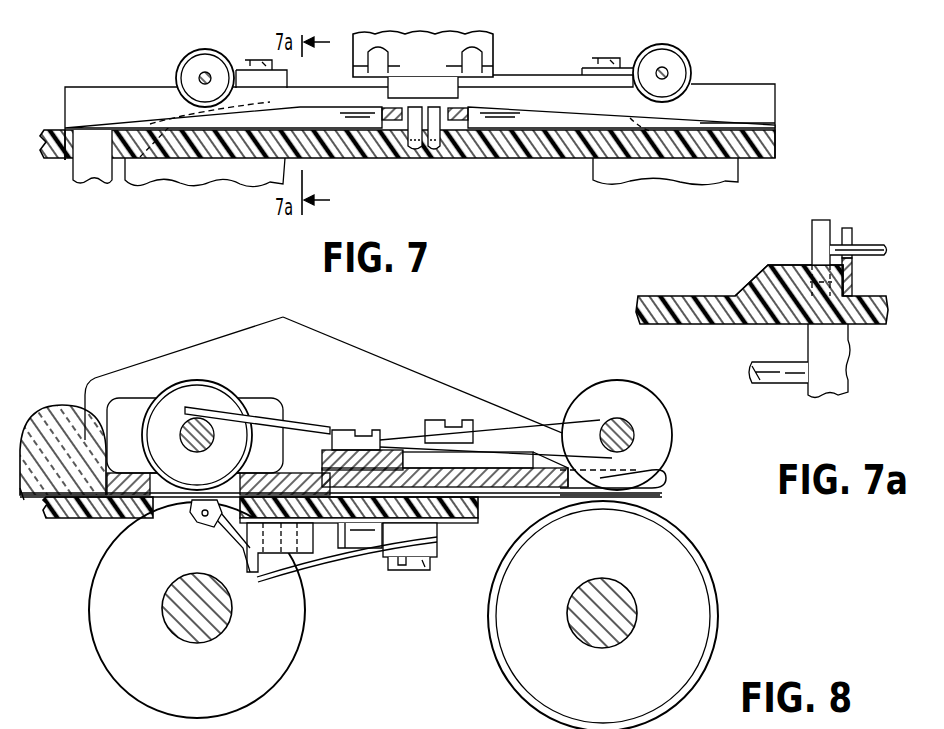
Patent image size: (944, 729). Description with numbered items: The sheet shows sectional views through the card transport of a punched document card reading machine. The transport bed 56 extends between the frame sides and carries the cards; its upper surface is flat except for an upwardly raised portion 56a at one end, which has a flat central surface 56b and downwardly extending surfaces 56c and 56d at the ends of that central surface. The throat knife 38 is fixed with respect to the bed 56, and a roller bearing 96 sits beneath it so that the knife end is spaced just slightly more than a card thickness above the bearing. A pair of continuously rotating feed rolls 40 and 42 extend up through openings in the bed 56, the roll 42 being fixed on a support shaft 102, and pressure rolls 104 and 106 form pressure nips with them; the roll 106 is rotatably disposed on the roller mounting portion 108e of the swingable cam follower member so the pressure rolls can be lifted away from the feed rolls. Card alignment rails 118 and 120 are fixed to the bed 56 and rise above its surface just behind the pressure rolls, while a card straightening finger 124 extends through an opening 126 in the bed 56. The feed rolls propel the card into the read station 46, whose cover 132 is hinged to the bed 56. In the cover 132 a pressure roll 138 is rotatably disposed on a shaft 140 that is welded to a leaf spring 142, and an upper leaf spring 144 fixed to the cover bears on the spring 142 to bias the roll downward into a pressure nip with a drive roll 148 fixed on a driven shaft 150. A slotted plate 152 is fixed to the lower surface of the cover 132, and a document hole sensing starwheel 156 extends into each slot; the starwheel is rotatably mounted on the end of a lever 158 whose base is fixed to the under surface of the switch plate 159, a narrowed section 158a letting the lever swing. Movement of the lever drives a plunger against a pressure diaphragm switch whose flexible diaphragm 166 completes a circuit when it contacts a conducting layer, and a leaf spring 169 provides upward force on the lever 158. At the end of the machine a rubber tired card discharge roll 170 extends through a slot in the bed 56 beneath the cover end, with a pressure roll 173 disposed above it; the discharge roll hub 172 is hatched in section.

In FIG. 7, the throat knife 38 is at (497, 43).
In FIG. 7, the feed roll 40 is at (622, 183).
In FIG. 7, the feed roll 42 is at (163, 190).
In FIG. 7a, the feed roll 42 is at (822, 398).
In FIG. 8, the read station 46 is at (379, 352).
In FIG. 7, the transport bed 56 is at (503, 153).
In FIG. 7a, the transport bed 56 is at (708, 297).
In FIG. 8, the transport bed 56 is at (60, 519).
In FIG. 7, the raised portion 56a is at (360, 120).
In FIG. 7a, the raised portion 56a is at (783, 270).
In FIG. 7, the flat central surface 56b is at (510, 100).
In FIG. 7, the downwardly extending surface 56c is at (268, 102).
In FIG. 7, the downwardly extending surface 56d is at (740, 123).
In FIG. 7, the roller bearing 96 is at (418, 150).
In FIG. 7a, the support shaft 102 is at (750, 364).
In FIG. 7, the pressure roll 104 is at (690, 58).
In FIG. 7, the pressure roll 106 is at (177, 72).
In FIG. 7a, the pressure roll 106 is at (820, 220).
In FIG. 7a, the roller mounting portion 108e is at (887, 243).
In FIG. 7, the card alignment rail 118 is at (767, 100).
In FIG. 7, the card alignment rail 120 is at (88, 92).
In FIG. 7a, the card alignment rail 120 is at (848, 228).
In FIG. 7, the card straightening finger 124 is at (93, 178).
In FIG. 7, the opening 126 is at (67, 163).
In FIG. 8, the cover 132 is at (475, 381).
In FIG. 8, the pressure roll 138 is at (223, 383).
In FIG. 8, the shaft 140 is at (180, 428).
In FIG. 8, the leaf spring 142 is at (310, 433).
In FIG. 8, the upper leaf spring 144 is at (664, 487).
In FIG. 8, the drive roll 148 is at (155, 678).
In FIG. 8, the shaft 150 is at (227, 624).
In FIG. 8, the plate 152 is at (267, 440).
In FIG. 8, the document hole sensing starwheel 156 is at (190, 513).
In FIG. 8, the lever 158 is at (213, 535).
In FIG. 8, the narrowed section 158a is at (358, 548).
In FIG. 8, the switch plate 159 is at (468, 524).
In FIG. 8, the flexible diaphragm 166 is at (447, 523).
In FIG. 8, the leaf spring 169 is at (265, 573).
In FIG. 8, the card discharge roll 170 is at (556, 678).
In FIG. 8, the reel hub 172 is at (636, 623).
In FIG. 8, the pressure roll 173 is at (587, 389).